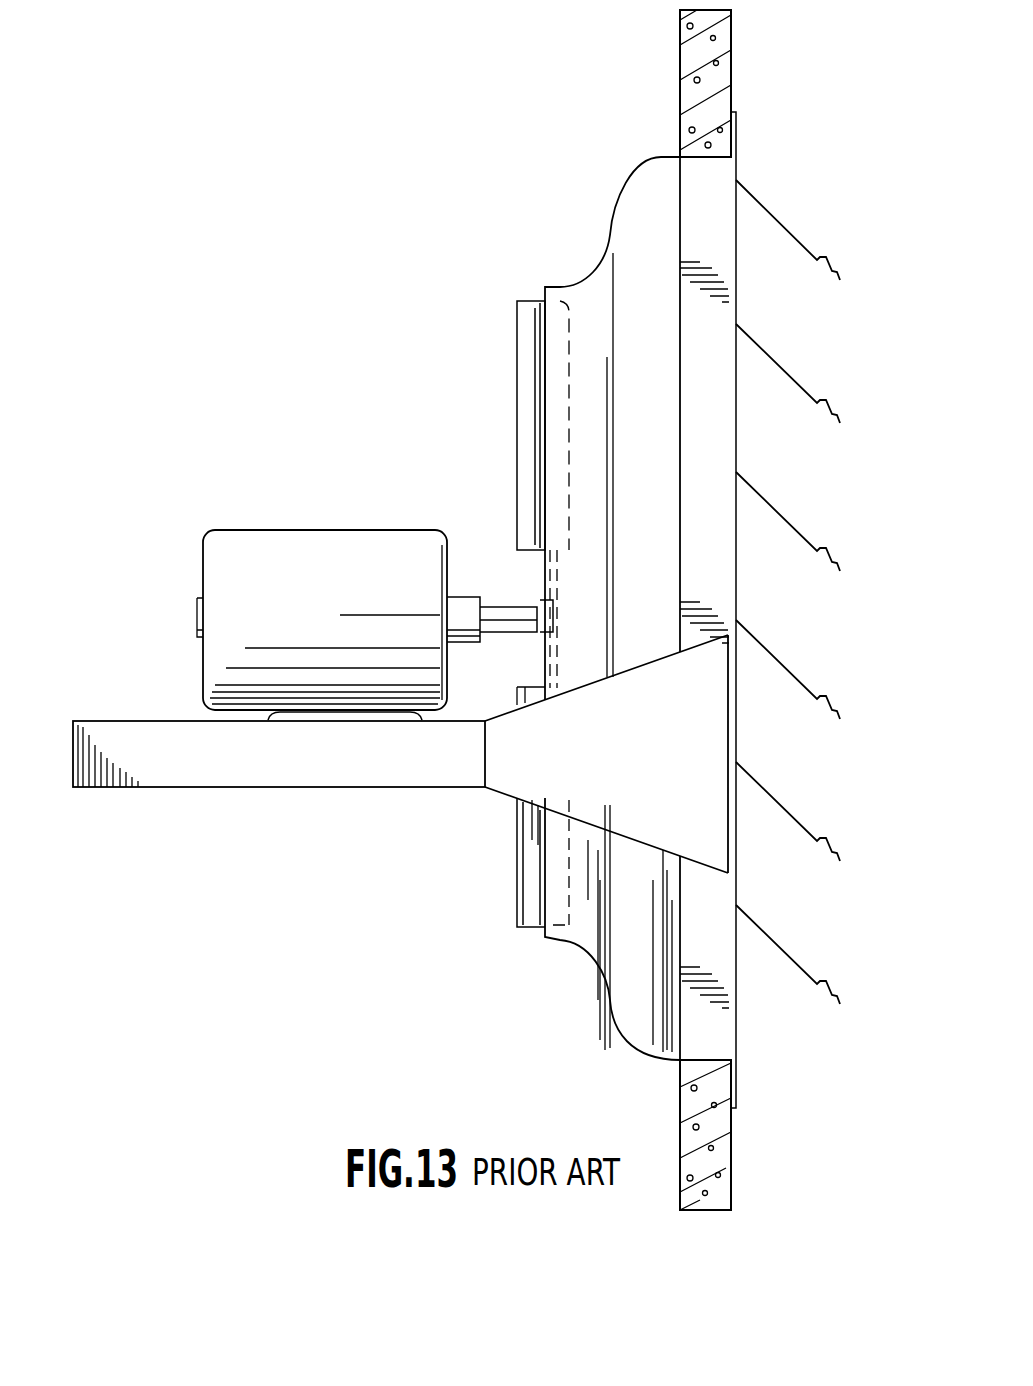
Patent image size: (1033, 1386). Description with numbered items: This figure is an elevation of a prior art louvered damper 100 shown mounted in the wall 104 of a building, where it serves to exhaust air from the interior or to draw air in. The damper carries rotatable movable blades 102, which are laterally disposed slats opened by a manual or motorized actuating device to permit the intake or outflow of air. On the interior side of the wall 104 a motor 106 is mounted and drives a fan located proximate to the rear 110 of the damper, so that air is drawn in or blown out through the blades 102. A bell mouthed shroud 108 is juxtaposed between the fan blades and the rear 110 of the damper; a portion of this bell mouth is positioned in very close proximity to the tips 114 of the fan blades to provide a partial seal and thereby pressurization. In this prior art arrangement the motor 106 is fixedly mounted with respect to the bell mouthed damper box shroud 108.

The louvered damper 100 is at (736, 146).
The rotatable movable blades 102 is at (803, 245).
The wall 104 is at (732, 66).
The motor 106 is at (341, 530).
The bell mouthed shroud 108 is at (614, 1028).
The rear of the damper 110 is at (686, 193).
The tips of the blades 114 is at (527, 301).